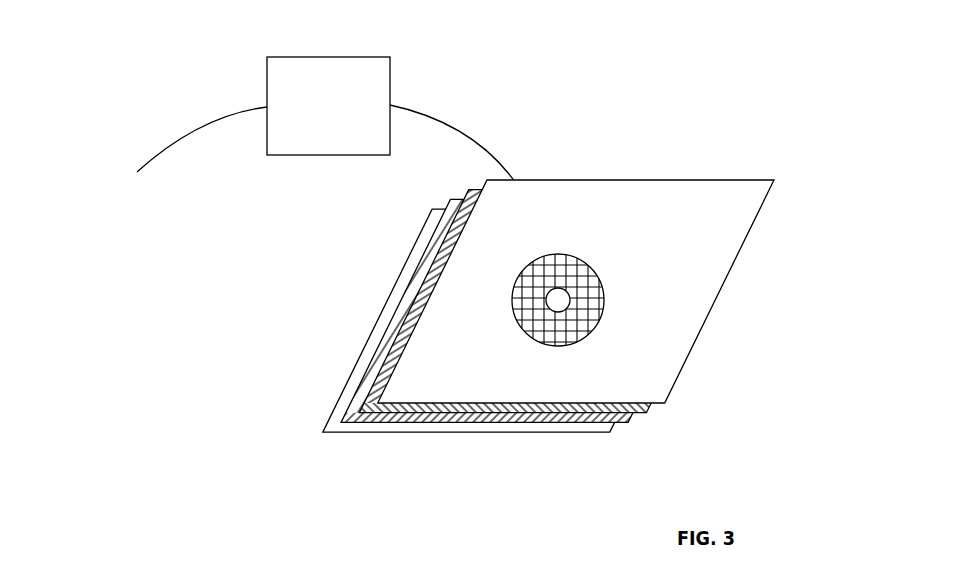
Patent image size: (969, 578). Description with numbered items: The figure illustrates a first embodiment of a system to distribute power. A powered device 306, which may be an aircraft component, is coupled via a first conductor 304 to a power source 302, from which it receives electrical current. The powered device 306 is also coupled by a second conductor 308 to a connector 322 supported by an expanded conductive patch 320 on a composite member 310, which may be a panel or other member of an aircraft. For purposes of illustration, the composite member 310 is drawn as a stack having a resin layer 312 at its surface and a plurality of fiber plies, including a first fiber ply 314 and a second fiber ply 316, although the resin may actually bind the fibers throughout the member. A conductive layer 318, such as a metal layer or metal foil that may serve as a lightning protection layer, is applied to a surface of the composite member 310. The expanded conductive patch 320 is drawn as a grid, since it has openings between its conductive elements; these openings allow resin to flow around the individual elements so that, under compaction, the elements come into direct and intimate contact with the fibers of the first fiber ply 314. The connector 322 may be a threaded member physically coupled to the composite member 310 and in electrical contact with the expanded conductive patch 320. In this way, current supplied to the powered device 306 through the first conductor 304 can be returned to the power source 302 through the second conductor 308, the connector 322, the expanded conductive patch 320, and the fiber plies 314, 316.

The power source 302 is at (86, 192).
The first conductor 304 is at (175, 143).
The powered device 306 is at (327, 57).
The second conductor 308 is at (497, 117).
The composite member 310 is at (730, 153).
The resin layer 312 is at (672, 388).
The first fiber ply 314 is at (512, 425).
The second fiber ply 316 is at (347, 421).
The conductive layer 318 is at (358, 355).
The expanded conductive patch 320 is at (604, 298).
The connector 322 is at (558, 287).